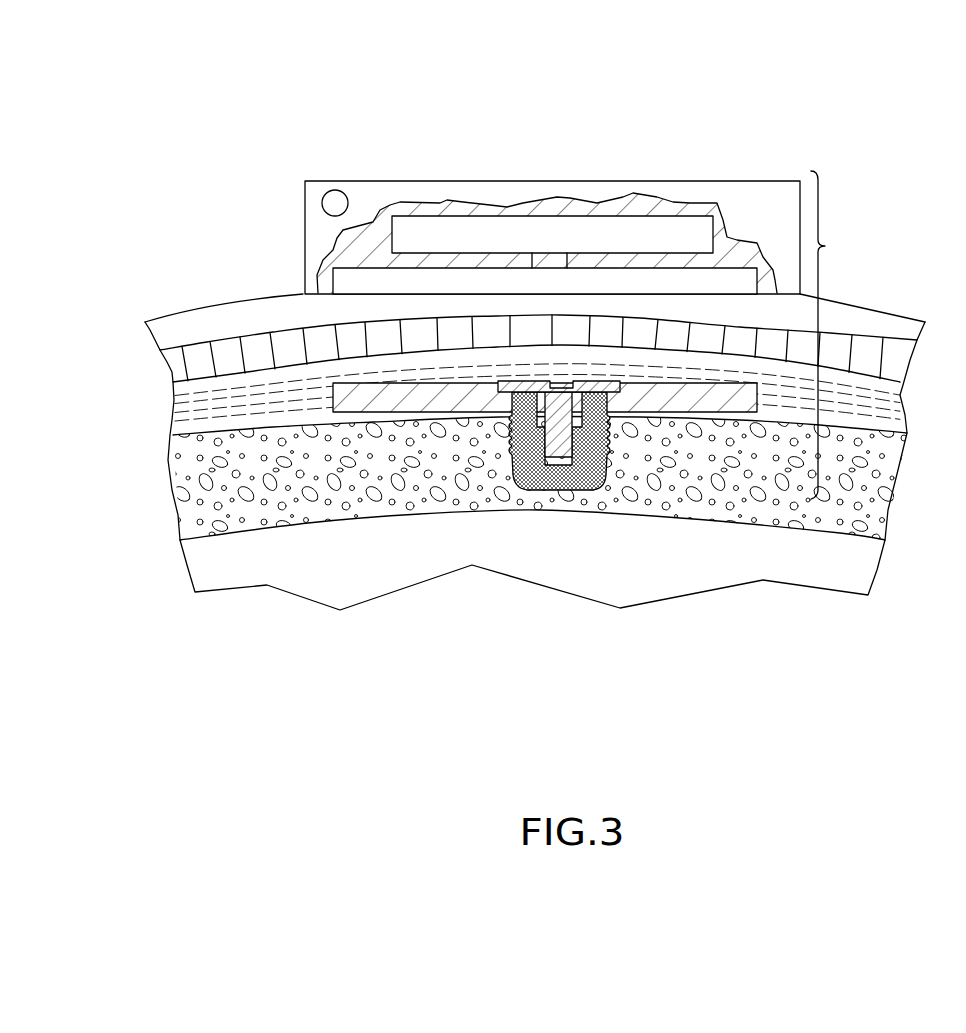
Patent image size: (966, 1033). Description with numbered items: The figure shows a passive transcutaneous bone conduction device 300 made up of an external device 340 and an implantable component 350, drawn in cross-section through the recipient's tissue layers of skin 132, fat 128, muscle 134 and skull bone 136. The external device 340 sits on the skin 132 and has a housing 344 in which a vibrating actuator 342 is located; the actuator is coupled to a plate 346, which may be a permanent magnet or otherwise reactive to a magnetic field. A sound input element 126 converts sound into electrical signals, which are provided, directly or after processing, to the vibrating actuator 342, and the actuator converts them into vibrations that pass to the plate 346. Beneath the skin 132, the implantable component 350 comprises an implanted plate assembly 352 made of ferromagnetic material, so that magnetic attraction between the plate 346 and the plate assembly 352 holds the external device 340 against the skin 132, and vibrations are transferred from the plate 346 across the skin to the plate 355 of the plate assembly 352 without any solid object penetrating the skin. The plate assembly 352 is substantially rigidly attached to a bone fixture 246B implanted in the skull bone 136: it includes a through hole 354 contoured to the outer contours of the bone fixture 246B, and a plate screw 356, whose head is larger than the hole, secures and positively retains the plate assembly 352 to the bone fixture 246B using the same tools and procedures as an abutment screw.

The sound input element 126 is at (322, 200).
The fat 128 is at (160, 366).
The skin 132 is at (145, 331).
The muscle 134 is at (166, 432).
The skull bone 136 is at (178, 516).
The bone fixture 246B is at (520, 490).
The transcutaneous bone conduction device 300 is at (837, 335).
The external device 340 is at (712, 94).
The vibrating actuator 342 is at (714, 237).
The housing 344 is at (745, 181).
The plate 346 is at (743, 281).
The implantable component 350 is at (686, 434).
The implanted plate assembly 352 is at (345, 442).
The through hole 354 is at (500, 381).
The plate 355 is at (378, 413).
The plate screw 356 is at (627, 413).